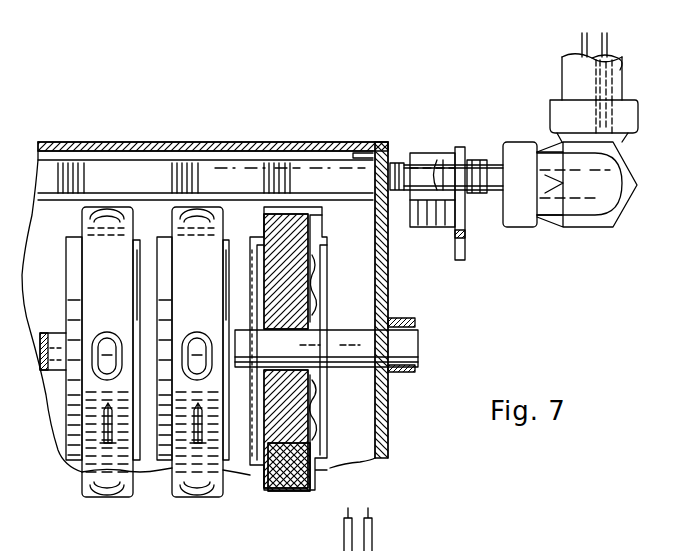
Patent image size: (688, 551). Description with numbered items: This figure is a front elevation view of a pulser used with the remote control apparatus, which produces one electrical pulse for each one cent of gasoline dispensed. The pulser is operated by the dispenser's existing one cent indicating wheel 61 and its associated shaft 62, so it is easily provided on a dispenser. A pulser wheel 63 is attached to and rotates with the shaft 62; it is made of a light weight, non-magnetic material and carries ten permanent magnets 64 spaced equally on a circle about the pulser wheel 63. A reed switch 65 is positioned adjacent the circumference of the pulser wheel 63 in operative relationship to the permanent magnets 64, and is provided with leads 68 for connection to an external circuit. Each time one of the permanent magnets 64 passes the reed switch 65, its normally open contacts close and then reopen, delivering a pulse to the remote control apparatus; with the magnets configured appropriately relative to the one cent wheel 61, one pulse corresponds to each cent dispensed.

The one cent indicating wheel 61 is at (205, 495).
The shaft 62 is at (420, 355).
The pulser wheel 63 is at (310, 494).
The permanent magnets 64 is at (305, 473).
The reed switch 65 is at (318, 170).
The leads 68 is at (584, 48).